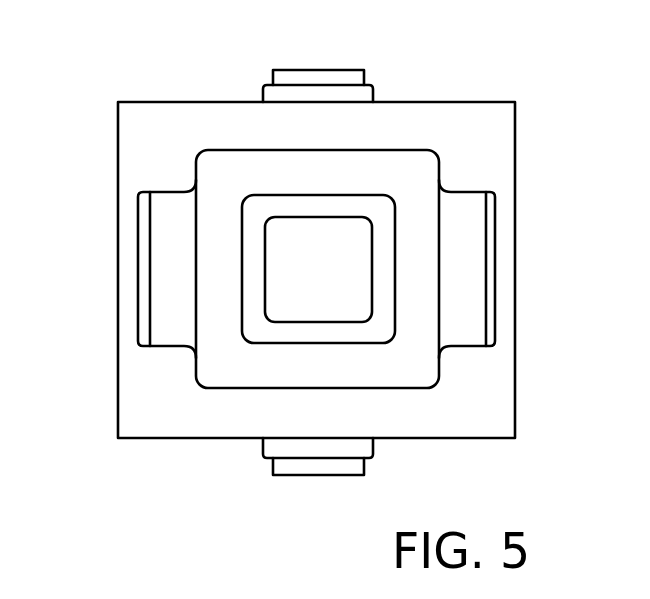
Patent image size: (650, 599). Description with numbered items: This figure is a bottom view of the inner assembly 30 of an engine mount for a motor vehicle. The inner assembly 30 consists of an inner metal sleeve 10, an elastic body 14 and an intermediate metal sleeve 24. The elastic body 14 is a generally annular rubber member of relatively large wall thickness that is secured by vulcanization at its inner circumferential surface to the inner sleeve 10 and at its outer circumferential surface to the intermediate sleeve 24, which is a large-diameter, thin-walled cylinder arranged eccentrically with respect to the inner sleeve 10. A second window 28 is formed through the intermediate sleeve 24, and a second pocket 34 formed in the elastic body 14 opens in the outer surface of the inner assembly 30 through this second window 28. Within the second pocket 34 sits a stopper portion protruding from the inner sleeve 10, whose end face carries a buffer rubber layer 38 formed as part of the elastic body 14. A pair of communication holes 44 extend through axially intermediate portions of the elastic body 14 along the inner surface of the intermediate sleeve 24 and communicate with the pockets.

The inner metal sleeve 10 is at (337, 473).
The elastic body 14 is at (363, 96).
The intermediate metal sleeve 24 is at (499, 150).
The second window 28 is at (226, 150).
The inner assembly 30 is at (497, 62).
The second pocket 34 is at (438, 323).
The buffer rubber layer 38 is at (292, 309).
The communication holes 44 is at (145, 280).